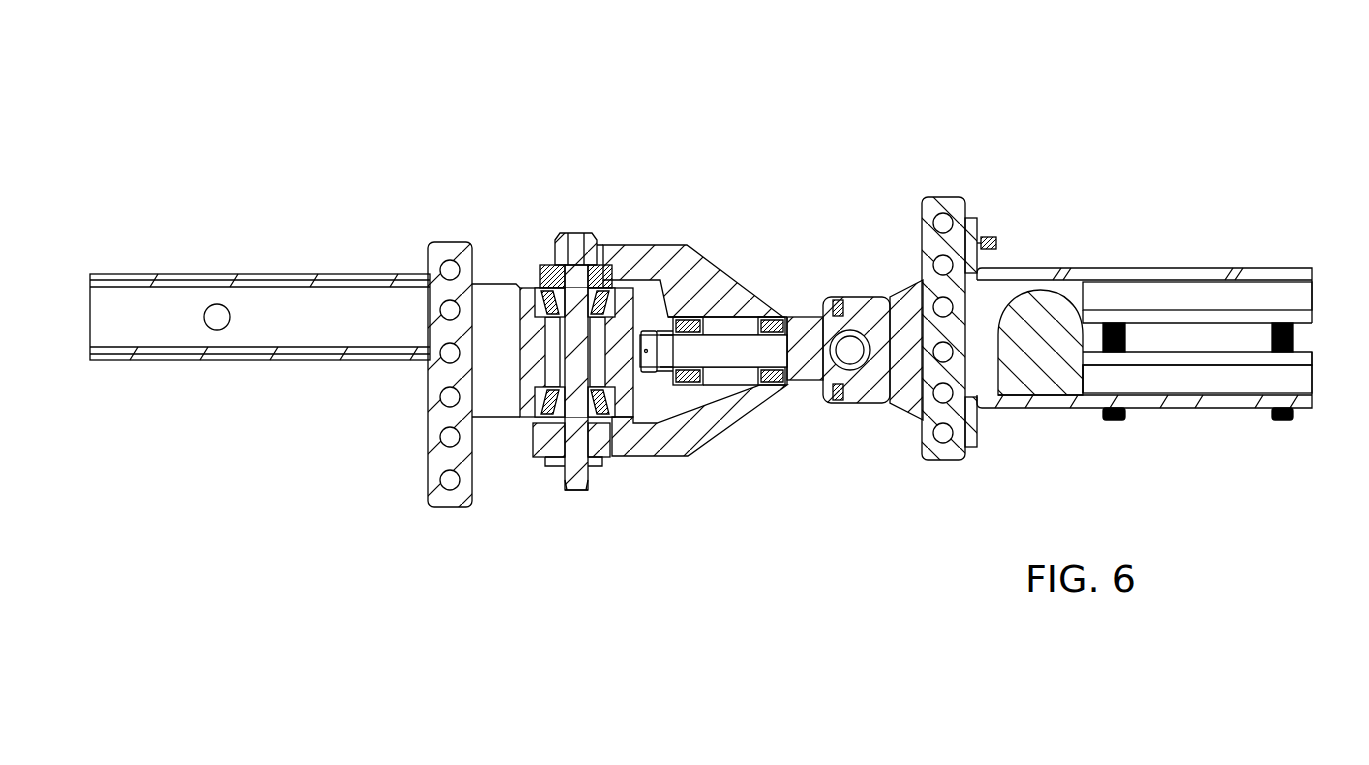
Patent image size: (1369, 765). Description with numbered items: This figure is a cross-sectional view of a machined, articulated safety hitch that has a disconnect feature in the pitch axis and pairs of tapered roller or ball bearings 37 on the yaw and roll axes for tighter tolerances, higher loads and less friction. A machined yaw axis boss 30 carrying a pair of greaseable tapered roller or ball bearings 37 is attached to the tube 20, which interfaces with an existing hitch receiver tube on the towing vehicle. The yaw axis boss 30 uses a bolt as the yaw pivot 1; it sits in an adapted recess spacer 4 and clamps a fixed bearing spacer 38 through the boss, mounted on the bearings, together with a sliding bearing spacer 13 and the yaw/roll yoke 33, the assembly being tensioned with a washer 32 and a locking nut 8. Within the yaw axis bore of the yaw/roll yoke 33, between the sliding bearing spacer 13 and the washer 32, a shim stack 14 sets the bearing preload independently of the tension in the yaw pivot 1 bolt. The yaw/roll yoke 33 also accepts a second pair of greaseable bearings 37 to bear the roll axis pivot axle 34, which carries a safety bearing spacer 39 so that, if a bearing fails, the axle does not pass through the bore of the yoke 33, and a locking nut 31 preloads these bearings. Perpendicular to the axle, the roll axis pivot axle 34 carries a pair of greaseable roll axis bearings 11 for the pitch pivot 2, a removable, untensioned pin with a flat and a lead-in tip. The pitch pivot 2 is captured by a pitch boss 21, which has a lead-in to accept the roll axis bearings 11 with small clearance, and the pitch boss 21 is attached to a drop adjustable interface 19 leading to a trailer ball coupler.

The yaw pivot 1 is at (580, 318).
The pitch pivot 2 is at (873, 348).
The adapted recess spacer 4 is at (550, 230).
The locking nut 8 is at (603, 492).
The roll axis bearings 11 is at (858, 318).
The sliding bearing spacer 13 is at (607, 437).
The shim stack 14 is at (607, 452).
The drop adjustable interface 19 is at (1067, 343).
The tube 20 is at (170, 272).
The pitch boss 21 is at (902, 343).
The yaw axis boss 30 is at (530, 365).
The locking nut 31 is at (653, 318).
The washer 32 is at (613, 463).
The yaw/roll yoke 33 is at (628, 248).
The roll axis pivot axle 34 is at (805, 347).
The tapered roller or ball bearings 37 is at (528, 279).
The fixed bearing spacer 38 is at (552, 274).
The safety bearing spacer 39 is at (670, 303).